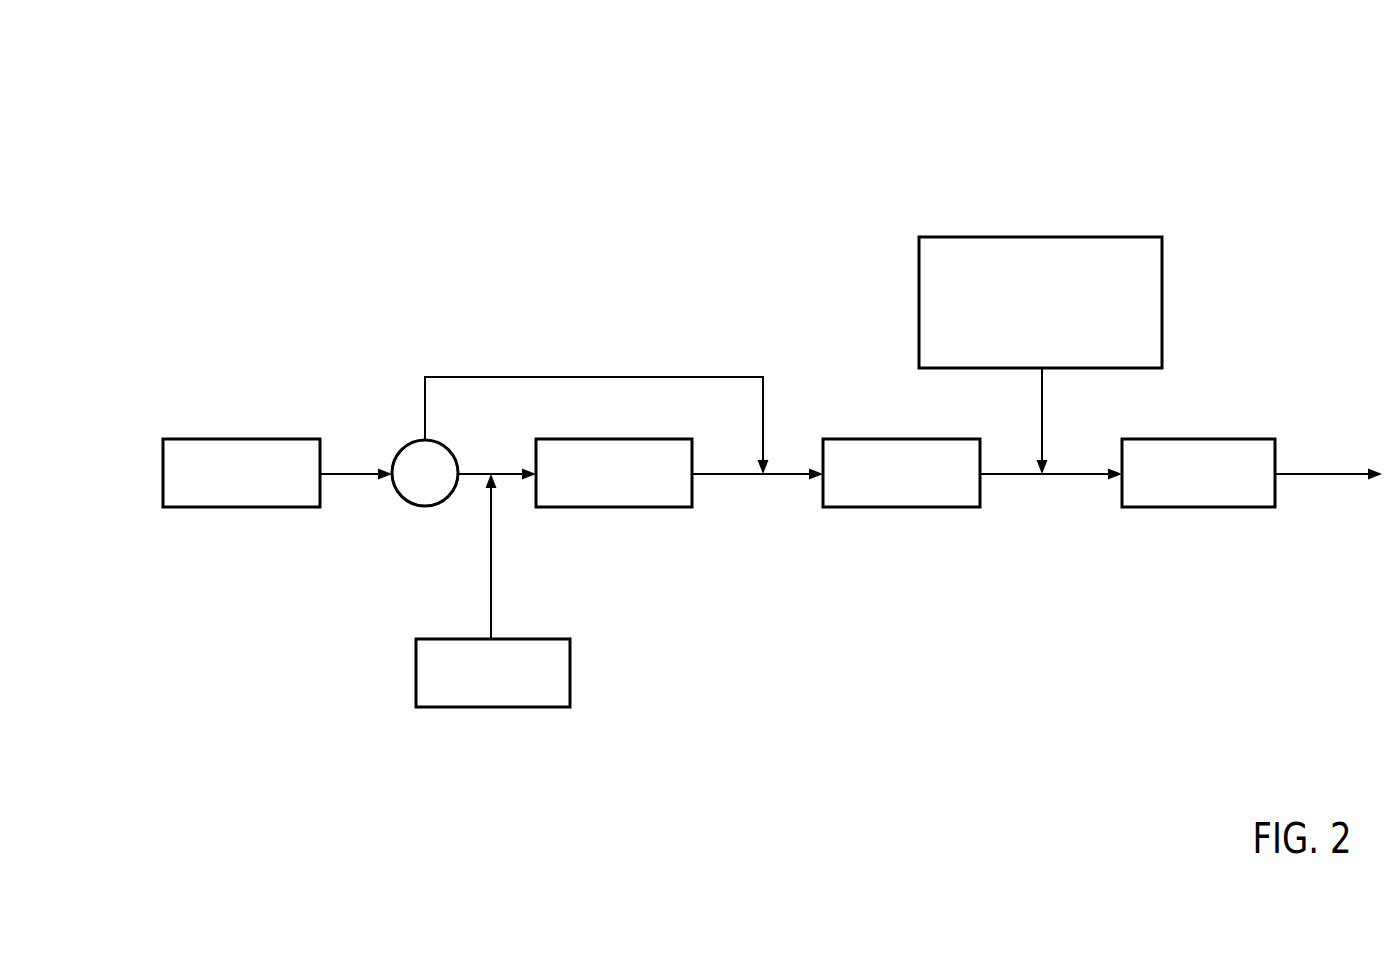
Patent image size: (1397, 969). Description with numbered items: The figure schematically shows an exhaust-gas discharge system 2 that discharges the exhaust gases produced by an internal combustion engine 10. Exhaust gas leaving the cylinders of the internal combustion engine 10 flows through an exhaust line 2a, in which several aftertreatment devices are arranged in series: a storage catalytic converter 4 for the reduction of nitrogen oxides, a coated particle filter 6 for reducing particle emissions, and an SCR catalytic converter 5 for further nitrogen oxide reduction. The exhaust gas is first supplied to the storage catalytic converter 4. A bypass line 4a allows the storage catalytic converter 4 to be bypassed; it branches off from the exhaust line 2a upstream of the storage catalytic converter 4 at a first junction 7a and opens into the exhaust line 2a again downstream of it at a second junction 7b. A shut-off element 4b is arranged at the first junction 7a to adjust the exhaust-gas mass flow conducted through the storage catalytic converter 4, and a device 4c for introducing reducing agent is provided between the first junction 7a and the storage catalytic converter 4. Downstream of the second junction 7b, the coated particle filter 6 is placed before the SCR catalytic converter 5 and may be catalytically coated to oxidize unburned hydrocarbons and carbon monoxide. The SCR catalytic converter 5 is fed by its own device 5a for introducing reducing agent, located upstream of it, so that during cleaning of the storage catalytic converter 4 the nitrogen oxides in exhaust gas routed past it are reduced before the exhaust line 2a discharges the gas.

The exhaust-gas discharge system 2 is at (512, 182).
The exhaust line 2a is at (357, 474).
The storage catalytic converter 4 is at (647, 482).
The bypass line 4a is at (625, 378).
The shut-off element 4b is at (420, 483).
The device for introducing reducing agent 4c is at (495, 685).
The SCR catalytic converter 5 is at (1182, 487).
The device for introducing reducing agent 5a is at (1045, 265).
The coated particle filter 6 is at (887, 492).
The first junction 7a is at (391, 408).
The second junction 7b is at (789, 438).
The internal combustion engine 10 is at (192, 455).